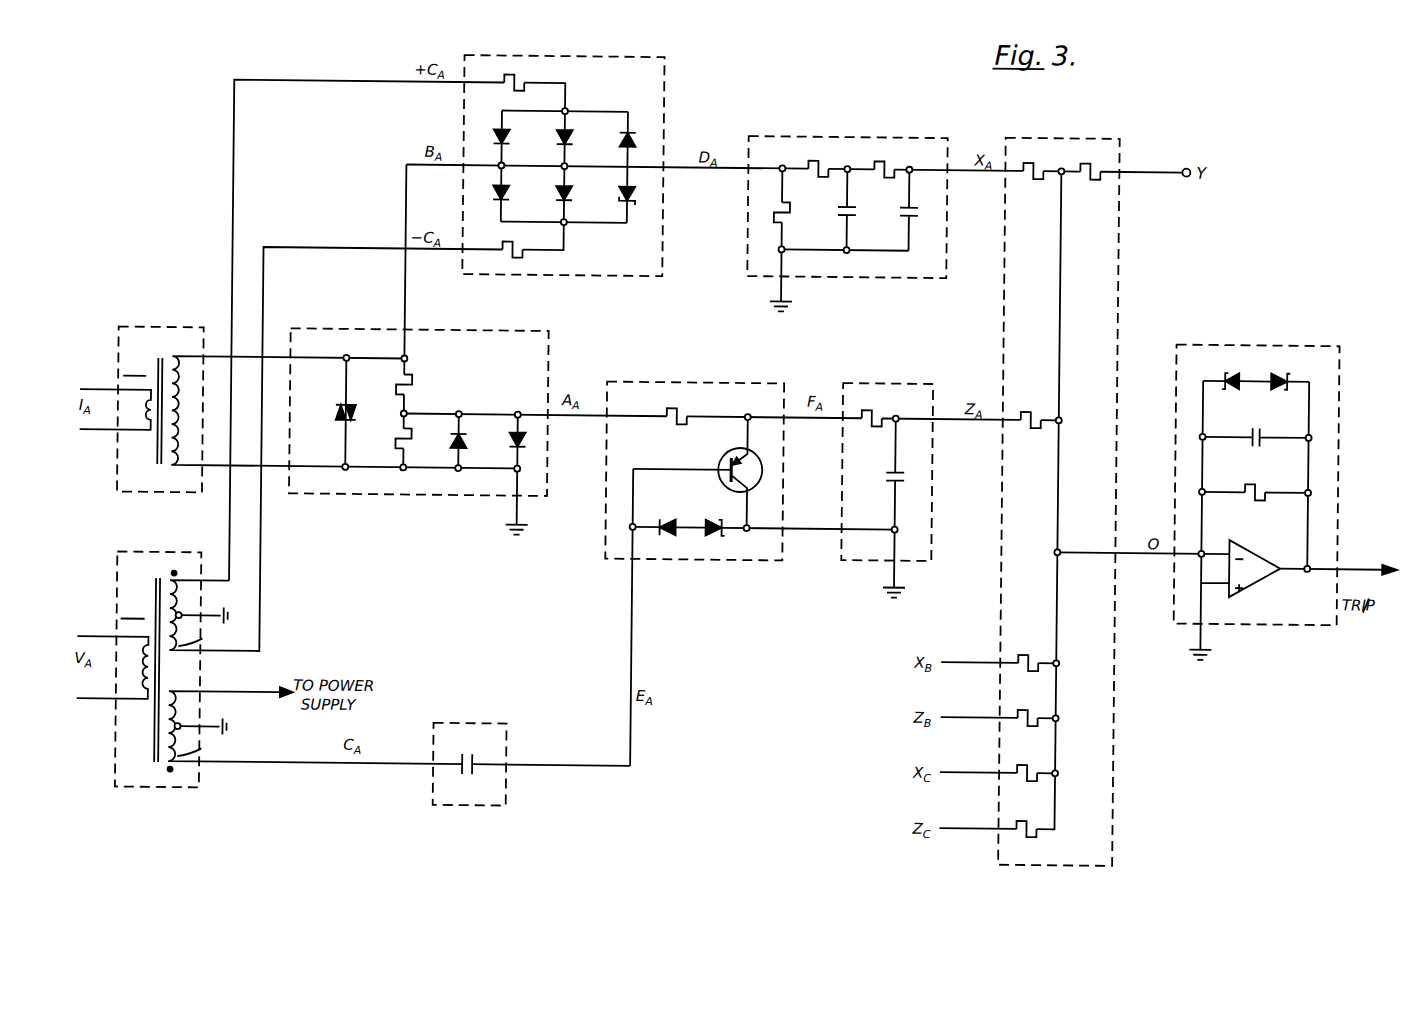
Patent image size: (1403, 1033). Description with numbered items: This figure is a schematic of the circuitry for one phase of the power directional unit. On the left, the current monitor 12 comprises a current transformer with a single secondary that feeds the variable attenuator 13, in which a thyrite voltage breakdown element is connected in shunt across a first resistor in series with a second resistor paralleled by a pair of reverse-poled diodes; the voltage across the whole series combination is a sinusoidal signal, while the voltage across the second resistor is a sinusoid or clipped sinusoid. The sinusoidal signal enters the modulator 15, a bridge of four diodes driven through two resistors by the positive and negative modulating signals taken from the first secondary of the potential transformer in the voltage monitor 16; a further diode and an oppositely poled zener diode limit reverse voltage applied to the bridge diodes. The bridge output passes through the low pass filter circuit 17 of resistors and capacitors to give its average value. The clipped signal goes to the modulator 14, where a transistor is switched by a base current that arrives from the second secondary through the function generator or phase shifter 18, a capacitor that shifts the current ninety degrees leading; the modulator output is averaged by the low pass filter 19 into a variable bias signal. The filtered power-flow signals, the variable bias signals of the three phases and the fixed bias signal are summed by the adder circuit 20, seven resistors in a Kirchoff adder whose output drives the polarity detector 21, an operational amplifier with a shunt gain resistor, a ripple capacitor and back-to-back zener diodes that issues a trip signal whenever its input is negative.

The current monitor 12 is at (148, 331).
The variable attenuator 13 is at (373, 331).
The modulator 14 is at (712, 381).
The modulator 15 is at (601, 56).
The potential transformer module 16 is at (148, 791).
The low pass filter circuit 17 is at (851, 134).
The function generator or phase shifter 18 is at (460, 806).
The low pass filter 19 is at (898, 380).
The adder circuit 20 is at (1118, 708).
The polarity detector 21 is at (1270, 617).